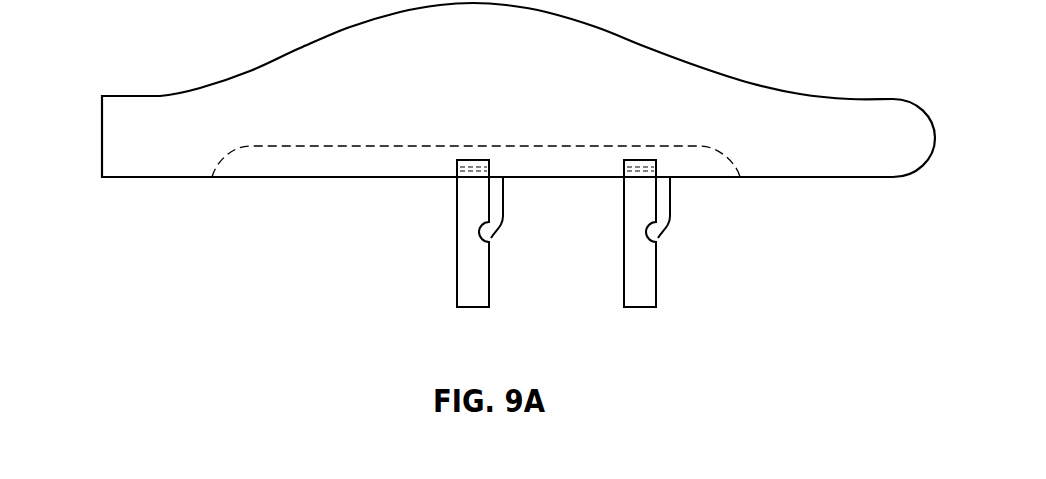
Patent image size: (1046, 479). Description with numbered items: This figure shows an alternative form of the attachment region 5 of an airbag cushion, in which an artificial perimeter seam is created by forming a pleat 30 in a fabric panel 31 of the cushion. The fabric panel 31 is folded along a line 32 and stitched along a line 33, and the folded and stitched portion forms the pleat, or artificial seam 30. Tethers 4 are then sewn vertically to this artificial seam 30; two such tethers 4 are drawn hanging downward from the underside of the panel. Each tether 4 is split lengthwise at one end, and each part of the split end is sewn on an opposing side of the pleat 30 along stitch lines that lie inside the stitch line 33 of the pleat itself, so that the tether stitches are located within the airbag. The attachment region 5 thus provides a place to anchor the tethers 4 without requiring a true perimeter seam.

The fabric panel 31 is at (117, 137).
The fold line 32 is at (148, 178).
The pleat 30 is at (253, 168).
The stitch line 33 is at (345, 146).
The tether 4 is at (466, 262).
The attachment region 5 is at (457, 163).